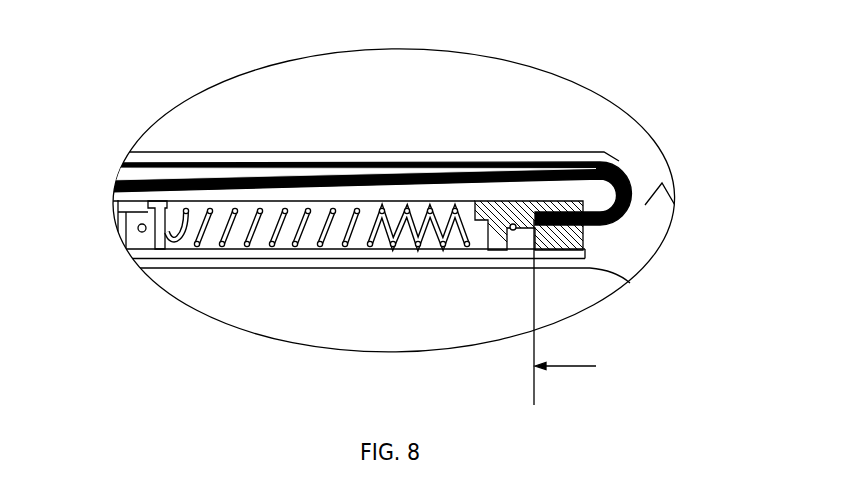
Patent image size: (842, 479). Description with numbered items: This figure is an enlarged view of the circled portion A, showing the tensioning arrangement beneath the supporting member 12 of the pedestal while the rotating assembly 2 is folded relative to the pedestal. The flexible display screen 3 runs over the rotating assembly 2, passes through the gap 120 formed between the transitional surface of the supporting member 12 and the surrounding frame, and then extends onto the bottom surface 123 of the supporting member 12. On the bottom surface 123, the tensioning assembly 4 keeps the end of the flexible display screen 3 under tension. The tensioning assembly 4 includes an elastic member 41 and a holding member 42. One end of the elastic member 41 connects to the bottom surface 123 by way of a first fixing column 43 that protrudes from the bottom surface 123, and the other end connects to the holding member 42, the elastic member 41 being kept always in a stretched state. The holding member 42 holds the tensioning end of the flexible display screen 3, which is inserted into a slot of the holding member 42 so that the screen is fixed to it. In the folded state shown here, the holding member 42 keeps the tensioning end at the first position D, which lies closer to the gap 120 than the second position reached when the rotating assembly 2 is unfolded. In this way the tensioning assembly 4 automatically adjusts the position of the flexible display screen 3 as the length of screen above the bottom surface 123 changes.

The rotating assembly 2 is at (168, 173).
The flexible display screen 3 is at (631, 165).
The tensioning assembly 4 is at (370, 308).
The supporting member 12 is at (122, 199).
The elastic member 41 is at (417, 247).
The holding member 42 is at (508, 252).
The first fixing column 43 is at (158, 246).
The gap 120 is at (614, 228).
The bottom surface 123 is at (136, 233).
The circled portion A is at (535, 68).
The first position D is at (575, 312).